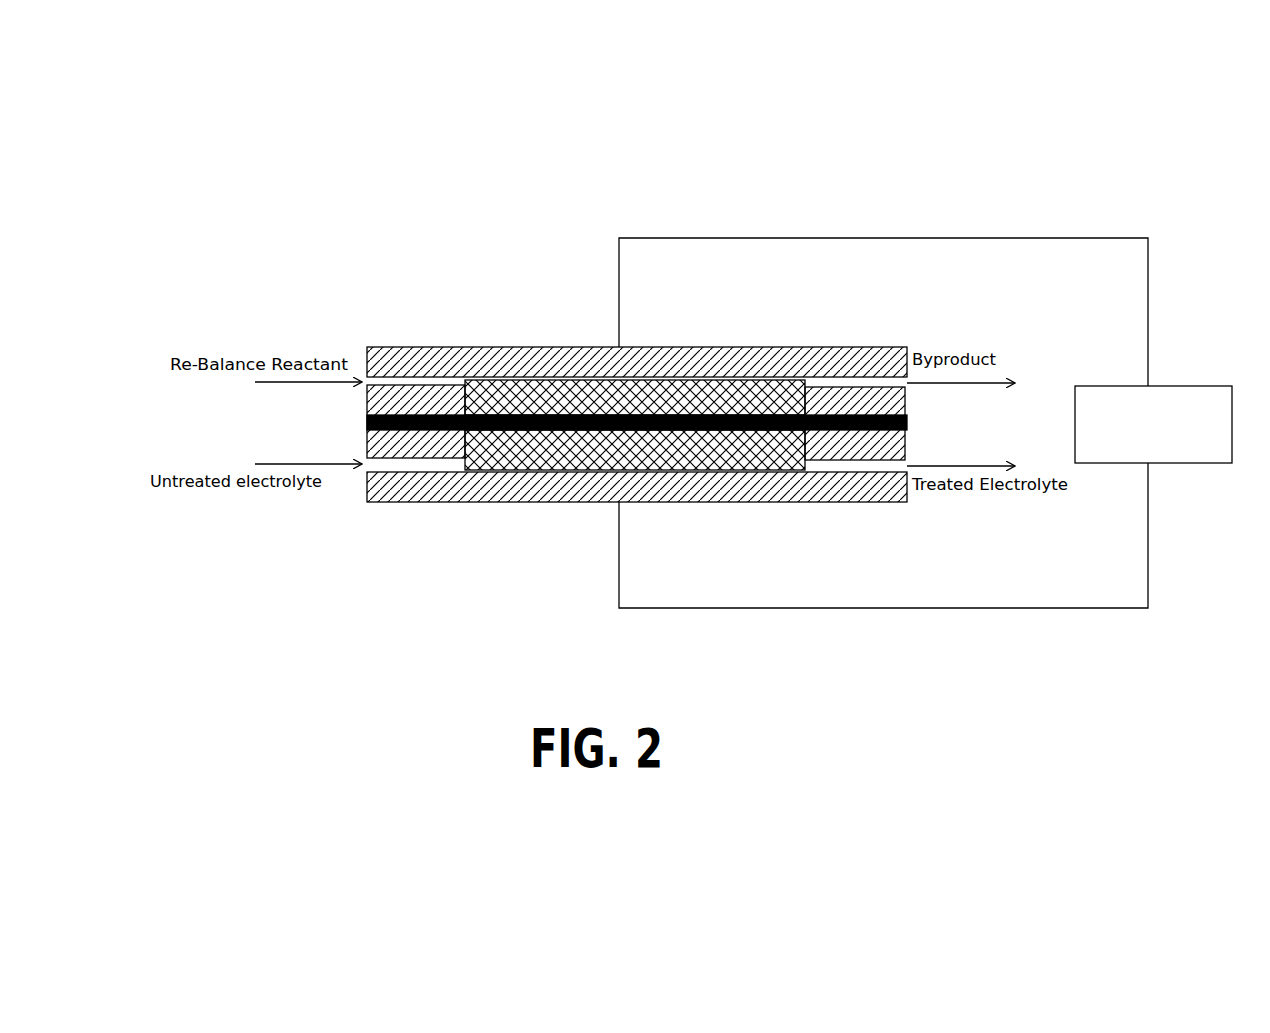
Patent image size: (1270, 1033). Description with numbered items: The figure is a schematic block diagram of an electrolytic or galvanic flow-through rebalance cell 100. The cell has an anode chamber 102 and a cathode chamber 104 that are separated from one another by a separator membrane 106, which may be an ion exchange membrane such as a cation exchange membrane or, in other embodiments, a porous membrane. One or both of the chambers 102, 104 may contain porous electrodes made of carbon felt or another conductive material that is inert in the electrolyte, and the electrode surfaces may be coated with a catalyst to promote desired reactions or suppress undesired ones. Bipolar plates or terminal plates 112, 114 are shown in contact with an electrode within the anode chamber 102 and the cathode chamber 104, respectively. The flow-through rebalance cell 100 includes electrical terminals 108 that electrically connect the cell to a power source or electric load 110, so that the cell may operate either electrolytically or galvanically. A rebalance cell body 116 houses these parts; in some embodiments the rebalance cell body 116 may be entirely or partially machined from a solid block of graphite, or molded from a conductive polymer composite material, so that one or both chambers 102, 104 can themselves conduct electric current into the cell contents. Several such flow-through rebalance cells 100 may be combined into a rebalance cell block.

The flow-through rebalance cell 100 is at (335, 185).
The anode chamber 102 is at (598, 393).
The cathode chamber 104 is at (550, 452).
The separator membrane 106 is at (480, 416).
The electrical terminals 108 is at (619, 346).
The power source or electric load 110 is at (1193, 382).
The bipolar plate or terminal plate 112 is at (440, 358).
The bipolar plate or terminal plate 114 is at (566, 500).
The rebalance cell body 116 is at (377, 345).